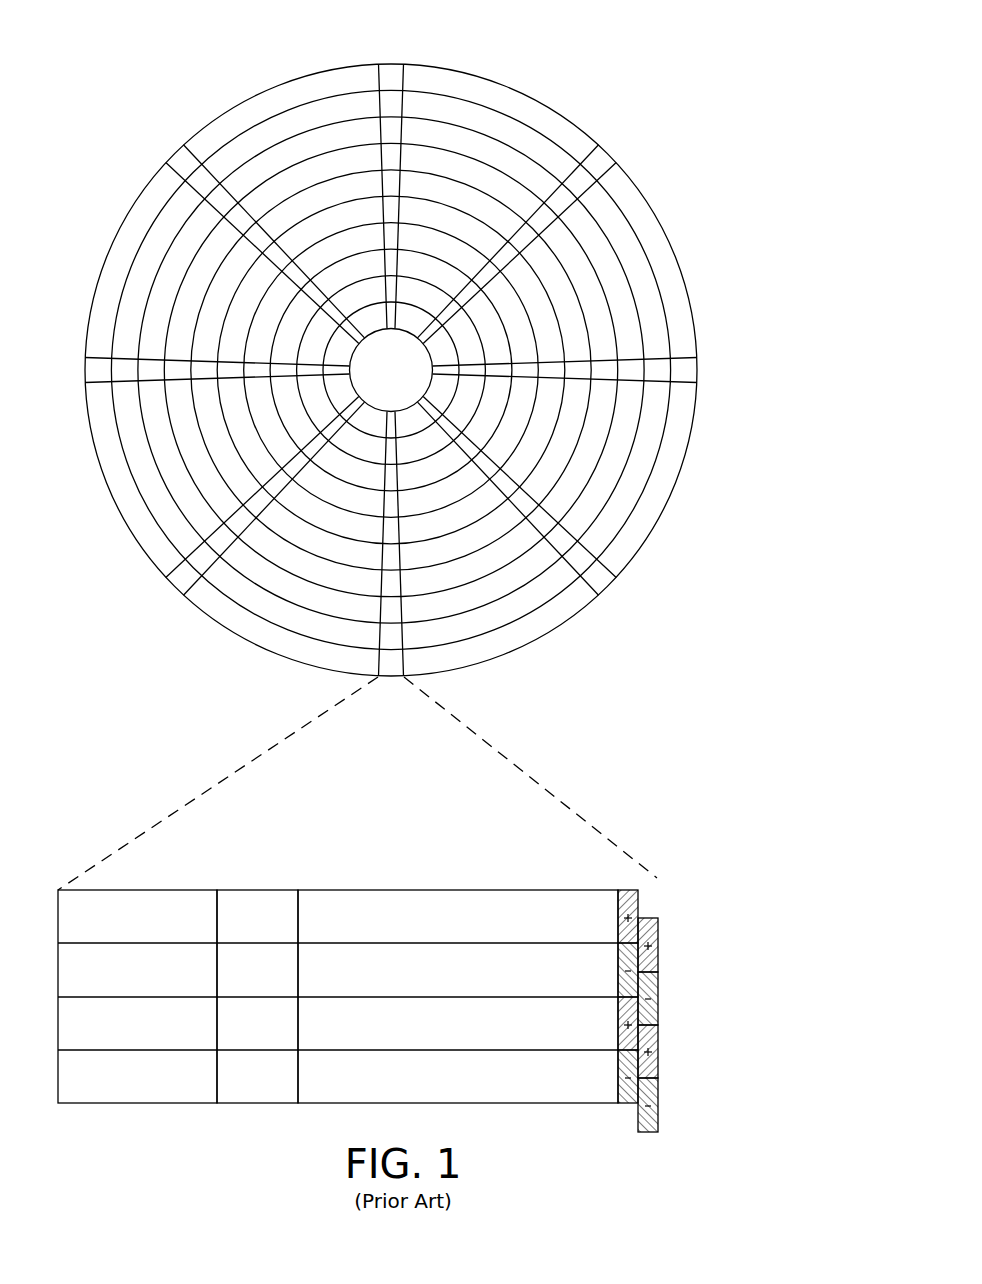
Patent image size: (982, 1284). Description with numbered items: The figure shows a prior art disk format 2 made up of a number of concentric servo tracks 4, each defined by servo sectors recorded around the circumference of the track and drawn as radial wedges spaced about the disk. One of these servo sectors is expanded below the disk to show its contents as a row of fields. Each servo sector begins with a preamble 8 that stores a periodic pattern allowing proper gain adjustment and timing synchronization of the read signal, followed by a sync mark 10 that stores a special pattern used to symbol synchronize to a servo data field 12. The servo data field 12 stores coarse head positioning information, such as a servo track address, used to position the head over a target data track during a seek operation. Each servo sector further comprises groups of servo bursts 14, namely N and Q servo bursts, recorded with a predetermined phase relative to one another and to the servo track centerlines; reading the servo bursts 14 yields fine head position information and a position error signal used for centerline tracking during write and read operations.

The disk format 2 is at (160, 65).
The servo tracks 4 is at (496, 125).
The preamble 8 is at (145, 890).
The sync mark 10 is at (258, 890).
The servo data field 12 is at (447, 890).
The servo bursts 14 is at (656, 886).